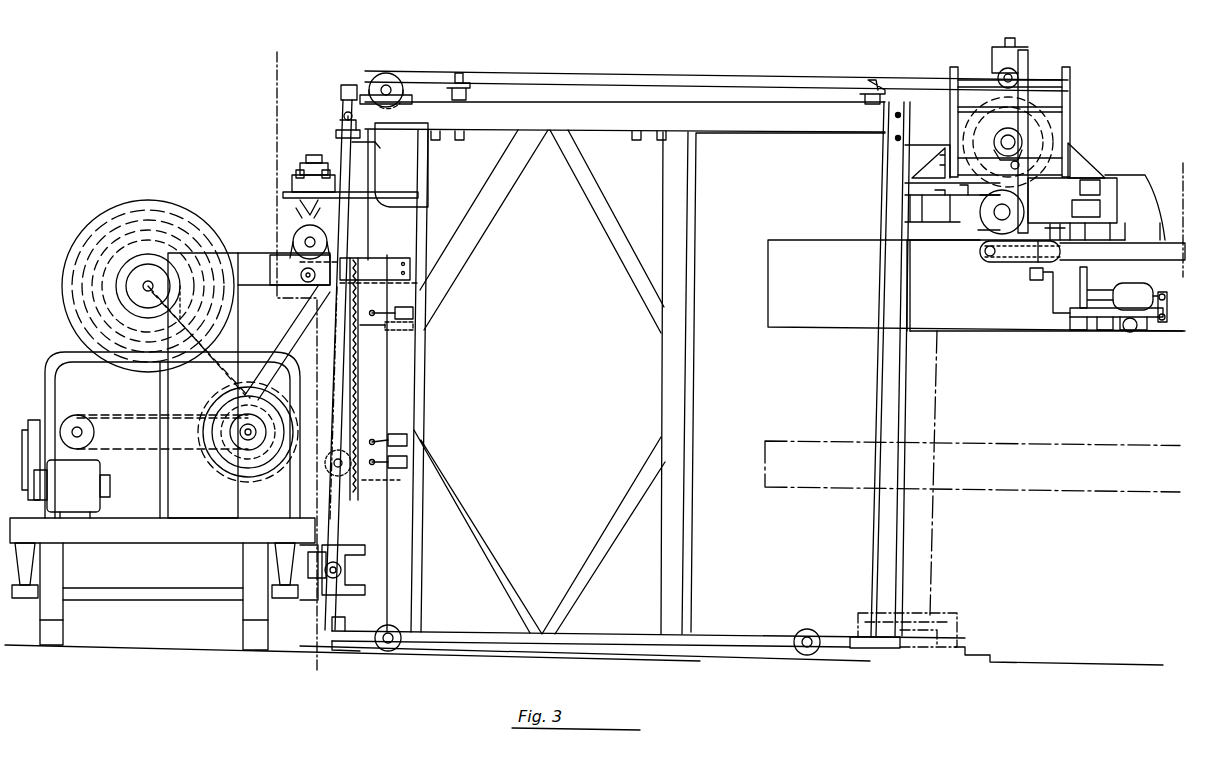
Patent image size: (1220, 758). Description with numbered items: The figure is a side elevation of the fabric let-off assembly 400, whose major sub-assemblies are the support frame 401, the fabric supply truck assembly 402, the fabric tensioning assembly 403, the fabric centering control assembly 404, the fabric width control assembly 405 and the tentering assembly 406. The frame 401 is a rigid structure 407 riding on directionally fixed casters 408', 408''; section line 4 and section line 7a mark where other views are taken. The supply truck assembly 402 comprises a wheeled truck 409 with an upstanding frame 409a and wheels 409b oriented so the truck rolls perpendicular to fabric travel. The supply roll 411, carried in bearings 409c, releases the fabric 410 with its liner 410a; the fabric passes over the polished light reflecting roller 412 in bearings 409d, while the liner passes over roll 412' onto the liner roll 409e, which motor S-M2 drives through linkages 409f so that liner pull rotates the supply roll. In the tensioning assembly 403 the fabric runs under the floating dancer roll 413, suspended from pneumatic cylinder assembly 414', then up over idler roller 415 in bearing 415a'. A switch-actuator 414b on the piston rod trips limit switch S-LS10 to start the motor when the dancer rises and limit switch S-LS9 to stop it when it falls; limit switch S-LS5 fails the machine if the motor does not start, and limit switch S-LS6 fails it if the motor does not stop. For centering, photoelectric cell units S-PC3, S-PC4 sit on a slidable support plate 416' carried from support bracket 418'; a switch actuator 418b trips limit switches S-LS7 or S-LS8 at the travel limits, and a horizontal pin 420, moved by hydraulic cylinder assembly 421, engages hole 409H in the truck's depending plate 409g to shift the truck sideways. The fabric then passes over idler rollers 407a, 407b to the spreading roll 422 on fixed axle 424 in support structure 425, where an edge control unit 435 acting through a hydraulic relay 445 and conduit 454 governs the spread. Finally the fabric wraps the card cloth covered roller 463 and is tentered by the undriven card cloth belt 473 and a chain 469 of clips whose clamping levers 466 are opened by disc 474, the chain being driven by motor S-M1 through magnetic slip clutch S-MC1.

The fabric let-off assembly 400 is at (665, 46).
The support frame 401 is at (697, 213).
The fabric supply truck assembly 402 is at (62, 360).
The fabric tensioning assembly 403 is at (410, 470).
The fabric centering control assembly 404 is at (259, 192).
The fabric width control assembly 405 is at (1052, 135).
The tentering assembly 406 is at (980, 284).
The rigid structure 407 is at (690, 368).
The idler roller 407a is at (470, 80).
The idler roller 407b is at (868, 82).
The caster 408' is at (632, 650).
The caster 408'' is at (978, 393).
The wheeled truck 409 is at (142, 535).
The upstanding frame 409a is at (186, 520).
The wheels 409b is at (55, 636).
The bearings 409c is at (155, 252).
The bearings 409d is at (295, 243).
The liner roll 409e is at (235, 478).
The mechanical linkages 409f is at (100, 418).
The depending plate 409g is at (310, 562).
The hole 409H is at (318, 600).
The fabric 410 is at (238, 290).
The liner 410a is at (245, 318).
The fabric let-off roll 411 is at (125, 262).
The polished metal light reflecting roller 412 is at (284, 249).
The roll 412' is at (271, 268).
The dancer roll 413 is at (400, 488).
The pneumatic cylinder assembly 414' is at (374, 133).
The switch-actuator 414b is at (400, 425).
The idler roller 415 is at (386, 74).
The bearing 415a' is at (416, 67).
The support plate 416' is at (265, 196).
The support bracket 418' is at (382, 165).
The switch actuator 418b is at (313, 165).
The horizontal pin 420 is at (350, 556).
The hydraulic cylinder assembly 421 is at (345, 572).
The fabric spreading roll 422 is at (1050, 141).
The fixed axle 424 is at (1000, 143).
The support structure 425 is at (1065, 72).
The fabric edge control unit 435 is at (912, 189).
The hydraulic relay 445 is at (939, 214).
The conduit 454 is at (1012, 40).
The card cloth covered roller 463 is at (985, 228).
The clamping lever 466 is at (1135, 217).
The endless flexible chain 469 is at (1152, 222).
The card cloth covered belt 473 is at (1010, 264).
The disc 474 is at (1052, 232).
The section line 4- 4 is at (286, 51).
The section line 7a- 7a is at (1163, 165).
The limit switch S-LS5 is at (400, 330).
The limit switch S-LS6 is at (407, 460).
The limit switch S-LS7 is at (335, 185).
The limit switch S-LS8 is at (290, 185).
The limit switch S-LS9 is at (407, 436).
The limit switch S-LS10 is at (415, 313).
The photoelectric cell unit S-PC3 is at (300, 220).
The photoelectric cell unit S-PC4 is at (300, 215).
The motor S-M1 is at (1132, 330).
The motor S-M2 is at (128, 474).
The magnetic slip clutch S-MC1 is at (1140, 284).